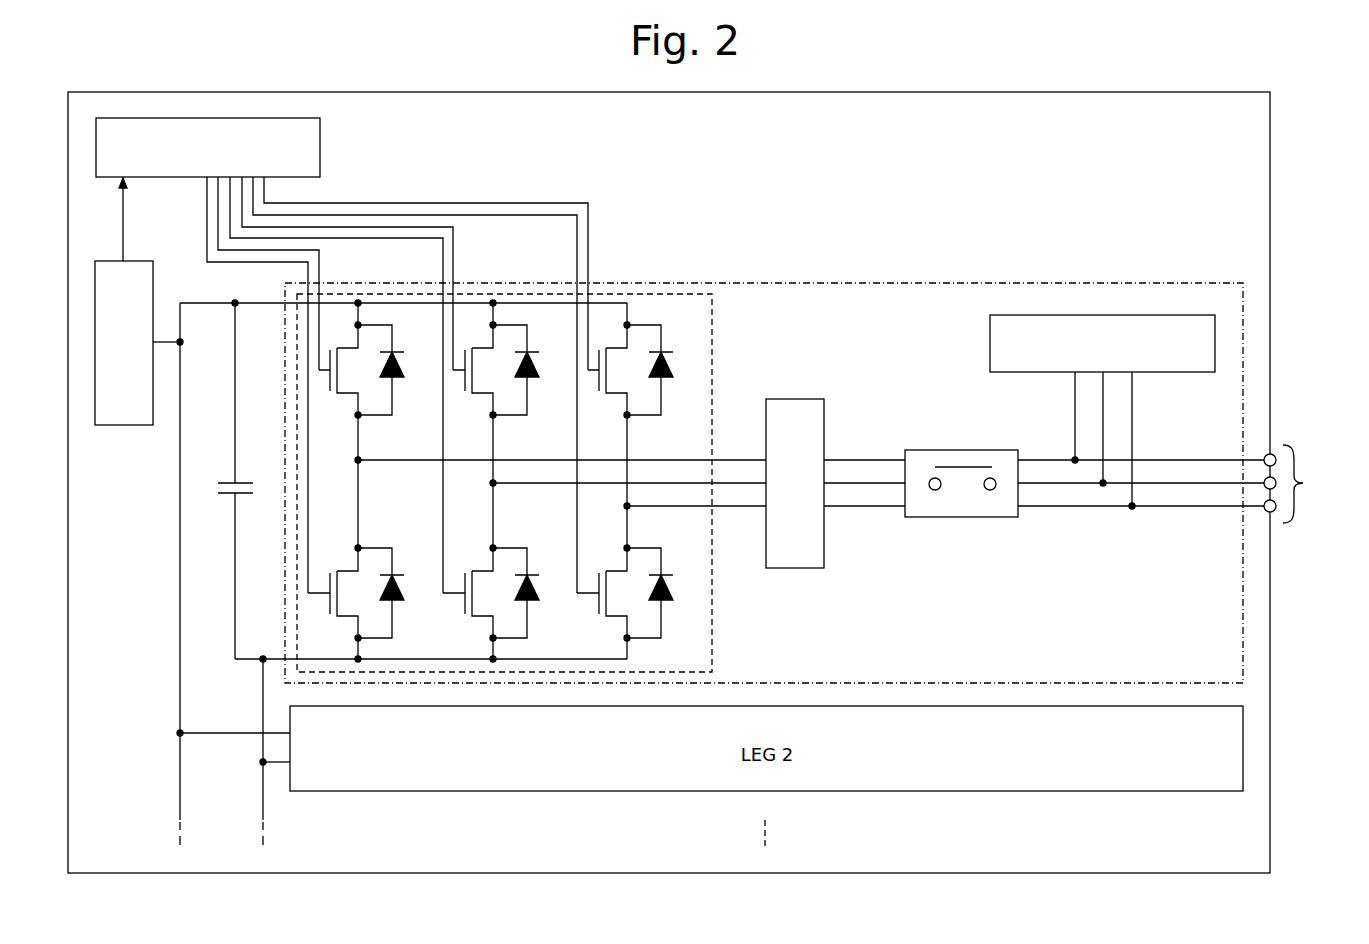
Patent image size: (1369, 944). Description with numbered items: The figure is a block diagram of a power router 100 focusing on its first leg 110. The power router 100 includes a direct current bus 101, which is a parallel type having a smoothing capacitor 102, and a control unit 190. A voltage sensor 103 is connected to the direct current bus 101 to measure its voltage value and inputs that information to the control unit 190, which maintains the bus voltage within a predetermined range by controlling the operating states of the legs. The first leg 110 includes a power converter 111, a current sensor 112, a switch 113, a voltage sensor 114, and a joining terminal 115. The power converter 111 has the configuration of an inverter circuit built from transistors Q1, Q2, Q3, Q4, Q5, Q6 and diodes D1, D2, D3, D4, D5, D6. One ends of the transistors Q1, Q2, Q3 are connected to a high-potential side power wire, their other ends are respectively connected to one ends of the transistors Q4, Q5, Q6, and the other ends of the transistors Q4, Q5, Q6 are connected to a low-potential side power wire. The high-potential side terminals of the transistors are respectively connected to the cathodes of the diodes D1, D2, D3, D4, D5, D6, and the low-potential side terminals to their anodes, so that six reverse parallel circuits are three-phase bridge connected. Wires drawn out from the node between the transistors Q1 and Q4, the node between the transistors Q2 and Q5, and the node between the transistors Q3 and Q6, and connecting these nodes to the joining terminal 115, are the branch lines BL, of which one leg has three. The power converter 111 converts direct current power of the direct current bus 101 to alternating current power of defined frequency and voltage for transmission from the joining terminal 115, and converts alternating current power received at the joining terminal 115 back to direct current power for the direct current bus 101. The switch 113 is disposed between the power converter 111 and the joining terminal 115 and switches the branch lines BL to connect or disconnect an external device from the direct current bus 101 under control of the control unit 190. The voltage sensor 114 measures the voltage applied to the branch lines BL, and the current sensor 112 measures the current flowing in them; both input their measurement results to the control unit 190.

The power router 100 is at (820, 92).
The direct current bus 101 is at (178, 650).
The smoothing capacitor 102 is at (220, 495).
The voltage sensor 103 is at (107, 425).
The first leg 110 is at (740, 282).
The power converter 111 is at (551, 483).
The current sensor 112 is at (798, 395).
The switch 113 is at (933, 514).
The voltage sensor 114 is at (1042, 376).
The joining terminal 115 is at (1308, 484).
The control unit 190 is at (320, 142).
The branch lines BL is at (733, 460).
The transistor Q1 is at (340, 373).
The transistor Q2 is at (474, 373).
The transistor Q3 is at (609, 373).
The transistor Q4 is at (334, 596).
The transistor Q5 is at (469, 596).
The transistor Q6 is at (603, 596).
The diode D1 is at (394, 370).
The diode D2 is at (529, 370).
The diode D3 is at (663, 370).
The diode D4 is at (394, 593).
The diode D5 is at (529, 593).
The diode D6 is at (663, 593).